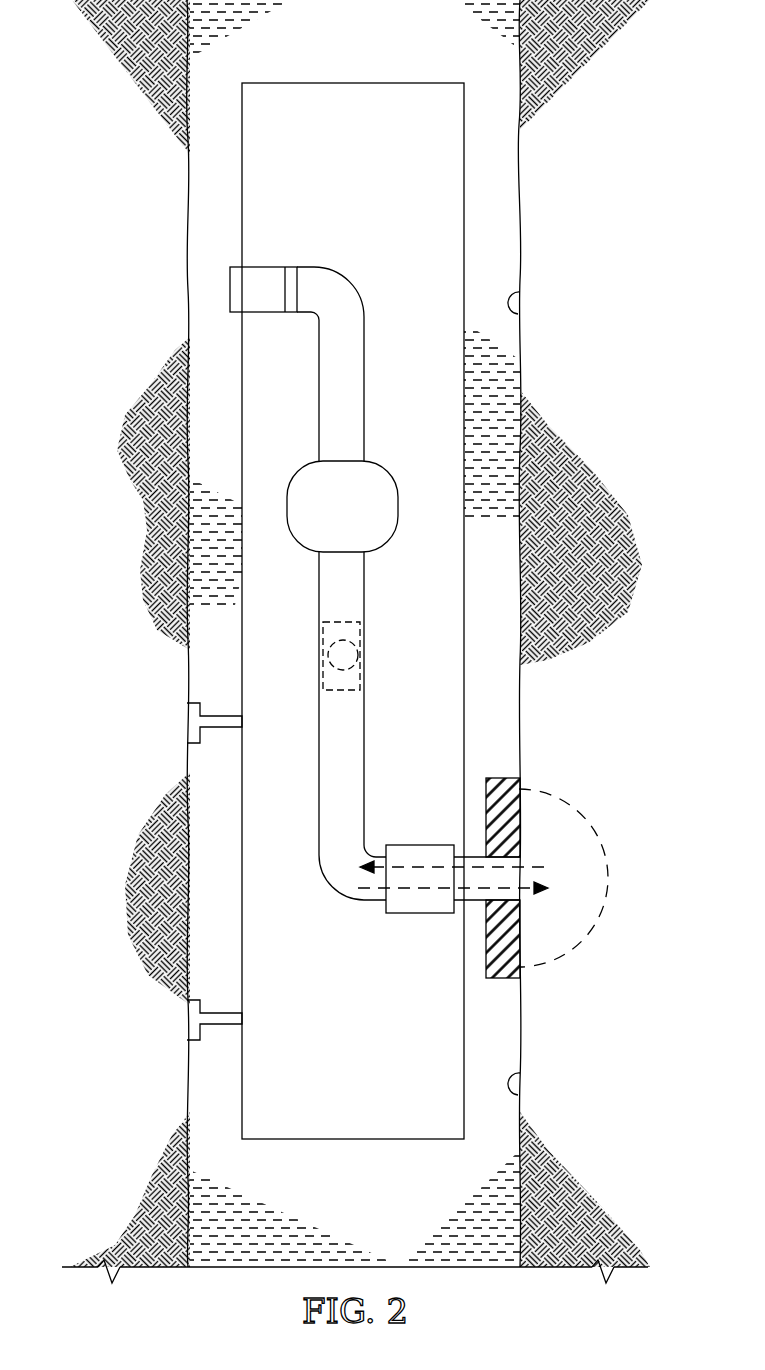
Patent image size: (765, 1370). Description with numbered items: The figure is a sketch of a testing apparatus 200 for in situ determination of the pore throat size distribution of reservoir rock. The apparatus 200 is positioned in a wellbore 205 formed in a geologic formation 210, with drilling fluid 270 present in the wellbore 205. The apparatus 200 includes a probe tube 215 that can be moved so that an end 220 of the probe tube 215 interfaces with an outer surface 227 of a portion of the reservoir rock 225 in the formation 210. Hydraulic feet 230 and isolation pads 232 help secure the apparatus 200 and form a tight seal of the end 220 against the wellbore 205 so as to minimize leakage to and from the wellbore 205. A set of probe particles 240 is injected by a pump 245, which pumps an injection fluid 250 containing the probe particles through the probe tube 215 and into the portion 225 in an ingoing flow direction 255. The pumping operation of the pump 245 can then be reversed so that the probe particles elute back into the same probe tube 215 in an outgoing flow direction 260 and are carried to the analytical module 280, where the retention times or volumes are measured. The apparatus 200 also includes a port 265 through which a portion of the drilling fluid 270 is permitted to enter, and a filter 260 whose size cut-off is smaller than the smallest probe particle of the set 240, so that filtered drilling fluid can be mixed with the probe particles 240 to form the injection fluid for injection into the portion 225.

The testing apparatus 200 is at (351, 78).
The wellbore 205 is at (187, 212).
The geologic formation 210 is at (565, 210).
The probe tube 215 is at (364, 360).
The end of the probe tube 220 is at (520, 862).
The portion of the reservoir rock 225 is at (608, 878).
The outer surface 227 is at (520, 292).
The hydraulic feet 230 is at (190, 723).
The isolation pads 232 is at (505, 778).
The set of probe particles 240 is at (356, 660).
The pump 245 is at (322, 520).
The injection fluid 250 is at (342, 624).
The ingoing flow direction 255 is at (365, 893).
The filter 260 is at (291, 268).
The port 265 is at (230, 290).
The drilling fluid 270 is at (193, 678).
The analytical module 280 is at (420, 913).